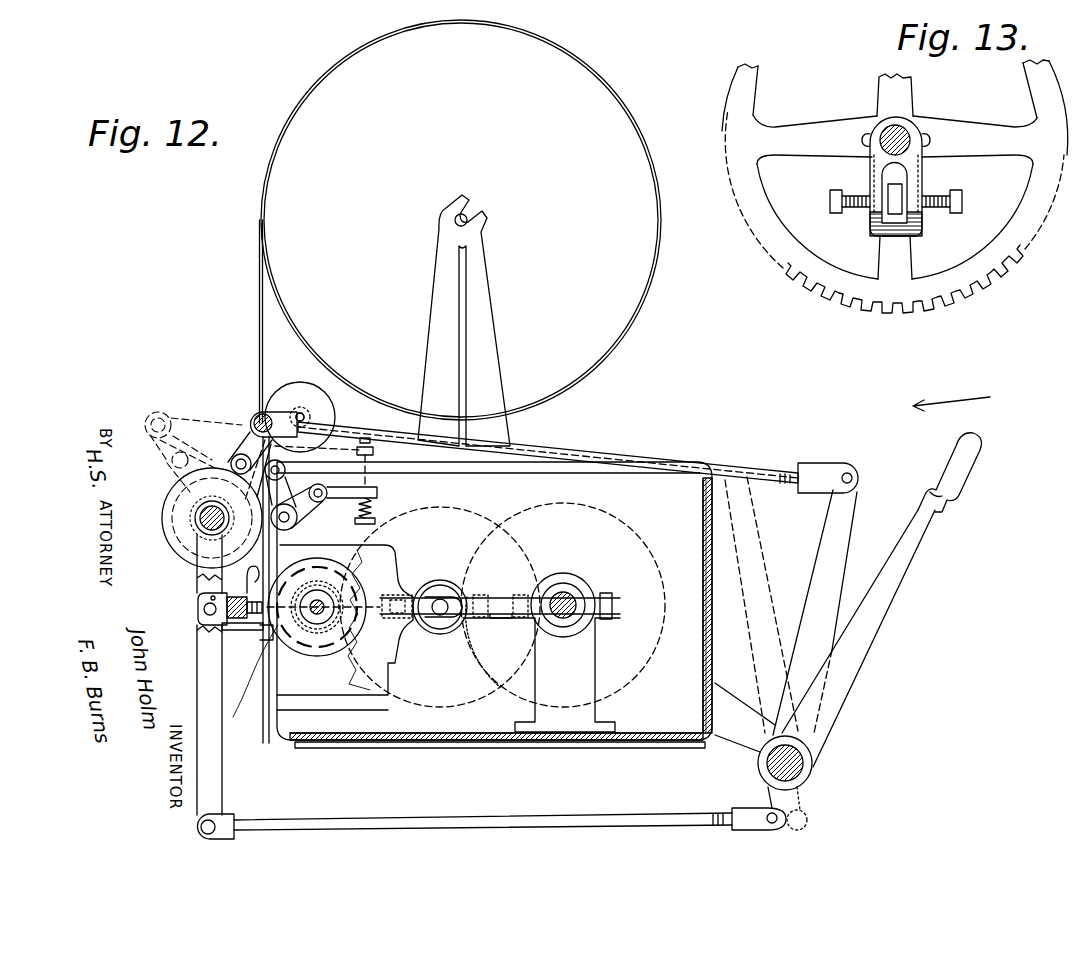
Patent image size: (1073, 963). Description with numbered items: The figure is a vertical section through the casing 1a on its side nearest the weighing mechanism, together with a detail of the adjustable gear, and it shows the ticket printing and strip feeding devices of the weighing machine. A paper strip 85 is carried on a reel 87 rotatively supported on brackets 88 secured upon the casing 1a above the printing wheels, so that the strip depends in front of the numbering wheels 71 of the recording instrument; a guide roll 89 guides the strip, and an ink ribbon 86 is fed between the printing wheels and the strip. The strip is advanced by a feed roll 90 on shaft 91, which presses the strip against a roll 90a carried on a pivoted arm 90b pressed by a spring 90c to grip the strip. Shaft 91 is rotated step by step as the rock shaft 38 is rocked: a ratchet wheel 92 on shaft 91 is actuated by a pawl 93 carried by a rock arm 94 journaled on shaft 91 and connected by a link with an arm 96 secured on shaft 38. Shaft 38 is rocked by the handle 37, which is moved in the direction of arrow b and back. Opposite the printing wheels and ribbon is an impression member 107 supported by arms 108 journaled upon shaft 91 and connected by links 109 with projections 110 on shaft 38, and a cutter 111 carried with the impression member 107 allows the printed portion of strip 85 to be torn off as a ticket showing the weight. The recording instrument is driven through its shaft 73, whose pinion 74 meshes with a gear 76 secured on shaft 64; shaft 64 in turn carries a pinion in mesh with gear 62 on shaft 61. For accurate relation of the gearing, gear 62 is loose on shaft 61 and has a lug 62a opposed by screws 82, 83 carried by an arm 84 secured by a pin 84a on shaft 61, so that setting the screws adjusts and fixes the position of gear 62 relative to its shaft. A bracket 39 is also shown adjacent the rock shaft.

In FIG. 12, the strip of paper 85 is at (258, 357).
In FIG. 12, the rock arm 94 is at (257, 415).
In FIG. 12, the pawl 93 is at (617, 450).
In FIG. 12, the guide roll 89 is at (321, 399).
In FIG. 12, the reel 87 is at (603, 346).
In FIG. 12, the brackets 88 is at (490, 369).
In FIG. 12, the arm 96 is at (838, 552).
In FIG. 12, the handle 37 is at (902, 588).
In FIG. 12, the arrow b is at (951, 394).
In FIG. 12, the rock shaft 38 is at (803, 767).
In FIG. 12, the bracket 39 is at (717, 752).
In FIG. 12, the projections 110 is at (762, 797).
In FIG. 12, the casing 1a is at (703, 670).
In FIG. 12, the gear 62 is at (666, 560).
In FIG. 13, the gear 62 is at (973, 127).
In FIG. 12, the shaft 61 is at (568, 597).
In FIG. 13, the shaft 61 is at (905, 128).
In FIG. 12, the shaft 64 is at (440, 598).
In FIG. 12, the gear 76 is at (447, 500).
In FIG. 12, the spring 90c is at (378, 506).
In FIG. 12, the pivoted arm 90b is at (348, 511).
In FIG. 12, the roll 90a is at (302, 503).
In FIG. 12, the pinion 74 is at (317, 607).
In FIG. 12, the shaft 73 is at (317, 615).
In FIG. 12, the numbering wheels 71 is at (265, 633).
In FIG. 12, the ink ribbon 86 is at (260, 632).
In FIG. 12, the impression member 107 is at (198, 588).
In FIG. 12, the arms 108 is at (201, 683).
In FIG. 12, the cutter 111 is at (253, 683).
In FIG. 12, the links 109 is at (494, 628).
In FIG. 12, the shaft 91 is at (163, 507).
In FIG. 12, the feed roll 90 is at (168, 532).
In FIG. 12, the ratchet wheel 92 is at (188, 545).
In FIG. 13, the pin 84a is at (866, 140).
In FIG. 13, the arm 84 is at (867, 173).
In FIG. 13, the lug 62a is at (900, 190).
In FIG. 13, the screw 82 is at (857, 207).
In FIG. 13, the screw 83 is at (945, 207).